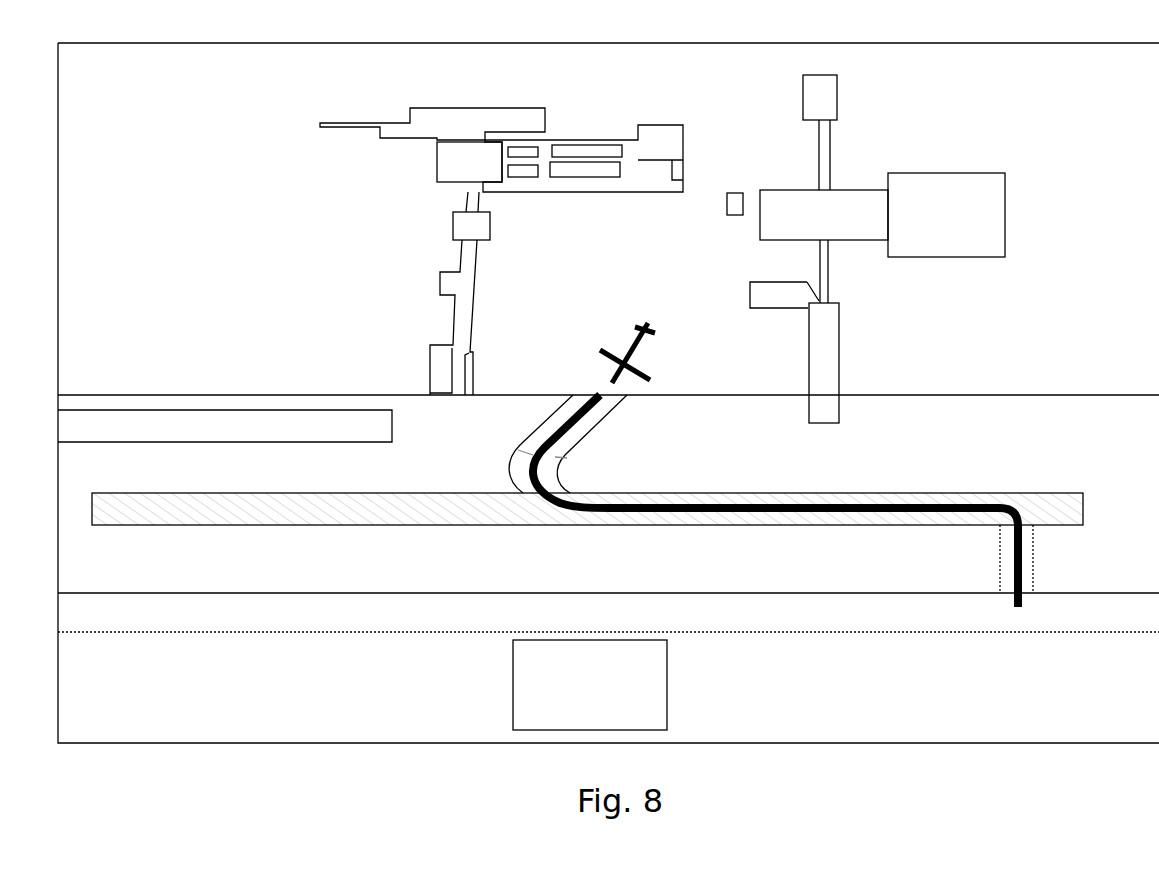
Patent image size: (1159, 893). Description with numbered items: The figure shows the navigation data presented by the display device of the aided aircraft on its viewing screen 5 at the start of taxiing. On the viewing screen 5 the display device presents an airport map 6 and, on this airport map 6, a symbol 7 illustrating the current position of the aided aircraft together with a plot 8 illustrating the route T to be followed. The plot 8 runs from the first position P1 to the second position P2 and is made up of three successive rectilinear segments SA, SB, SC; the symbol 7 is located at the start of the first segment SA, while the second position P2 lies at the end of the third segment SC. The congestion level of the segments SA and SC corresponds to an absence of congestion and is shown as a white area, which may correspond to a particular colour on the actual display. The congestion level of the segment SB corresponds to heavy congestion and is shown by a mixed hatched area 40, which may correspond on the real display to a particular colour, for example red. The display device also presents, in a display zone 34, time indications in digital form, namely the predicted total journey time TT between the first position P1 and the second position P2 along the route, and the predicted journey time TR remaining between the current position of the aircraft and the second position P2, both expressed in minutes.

The viewing screen 5 is at (858, 745).
The airport map 6 is at (995, 112).
The symbol 7 is at (645, 351).
The plot 8 is at (785, 498).
The display zone 34 is at (530, 733).
The mixed hatched area 40 is at (1022, 511).
The segment SA is at (578, 433).
The segment SB is at (670, 495).
The segment SC is at (1035, 553).
The first position P1 is at (617, 347).
The second position P2 is at (1018, 620).